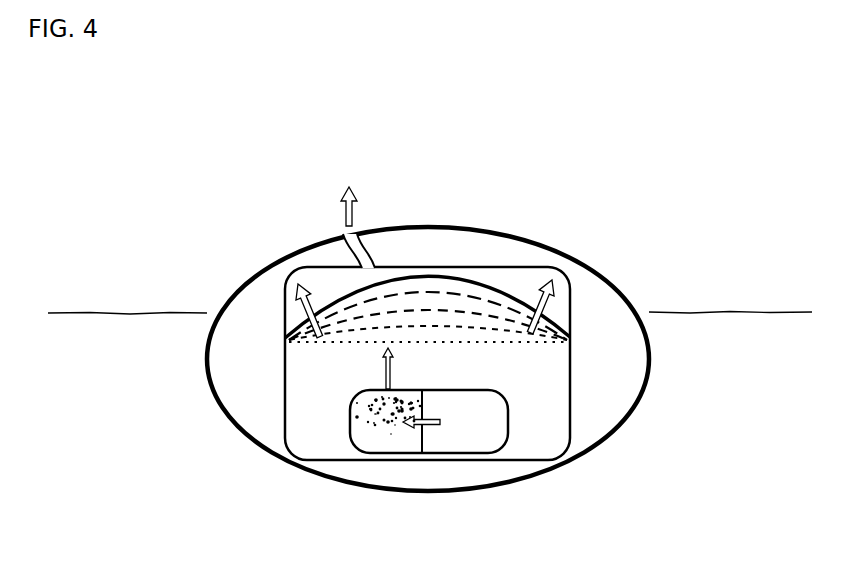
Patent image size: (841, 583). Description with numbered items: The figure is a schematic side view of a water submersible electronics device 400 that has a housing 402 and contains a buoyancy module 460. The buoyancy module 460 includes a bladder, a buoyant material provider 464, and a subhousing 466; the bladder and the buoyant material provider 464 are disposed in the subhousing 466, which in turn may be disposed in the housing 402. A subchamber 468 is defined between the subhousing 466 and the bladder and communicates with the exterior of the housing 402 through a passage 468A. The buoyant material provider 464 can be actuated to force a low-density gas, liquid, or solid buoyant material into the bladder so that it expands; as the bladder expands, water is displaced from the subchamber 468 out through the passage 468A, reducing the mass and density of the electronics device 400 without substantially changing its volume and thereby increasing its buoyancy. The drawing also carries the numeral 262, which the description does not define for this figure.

The electronics device 400 is at (256, 141).
The housing 402 is at (236, 285).
The diaphragm 262 is at (484, 258).
The buoyancy module 460 is at (590, 398).
The buoyant material provider 464 is at (368, 437).
The subhousing 466 is at (588, 301).
The subchamber 468 is at (527, 258).
The passage 468A is at (380, 246).